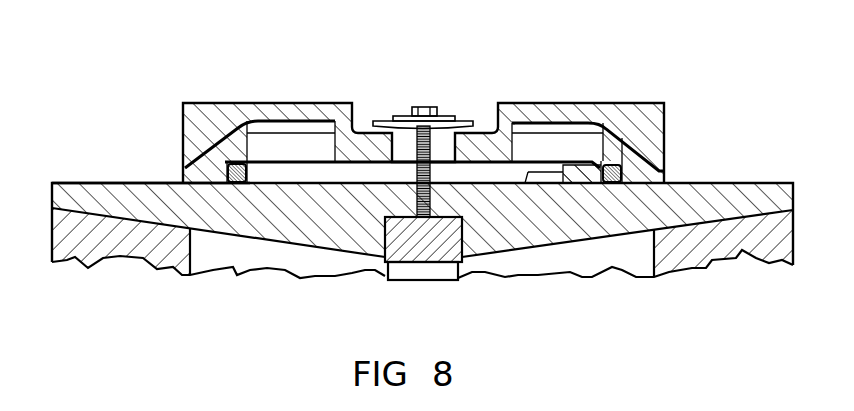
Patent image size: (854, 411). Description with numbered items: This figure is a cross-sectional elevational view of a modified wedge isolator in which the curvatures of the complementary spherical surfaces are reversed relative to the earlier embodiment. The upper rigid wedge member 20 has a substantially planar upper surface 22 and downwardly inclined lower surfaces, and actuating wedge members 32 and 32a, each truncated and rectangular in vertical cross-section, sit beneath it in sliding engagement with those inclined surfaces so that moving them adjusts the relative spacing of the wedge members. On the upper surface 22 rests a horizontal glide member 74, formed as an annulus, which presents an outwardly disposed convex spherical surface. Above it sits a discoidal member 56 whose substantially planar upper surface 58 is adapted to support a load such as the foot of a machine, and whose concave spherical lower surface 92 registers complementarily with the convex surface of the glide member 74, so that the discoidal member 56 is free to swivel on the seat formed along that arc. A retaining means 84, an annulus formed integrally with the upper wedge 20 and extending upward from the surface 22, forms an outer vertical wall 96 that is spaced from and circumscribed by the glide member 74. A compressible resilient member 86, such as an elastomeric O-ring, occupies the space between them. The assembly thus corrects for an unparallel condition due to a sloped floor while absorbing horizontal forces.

The upper rigid wedge member 20 is at (795, 193).
The upper surface 22 is at (88, 183).
The actuating wedge member 32 is at (793, 238).
The actuating wedge member 32a is at (50, 245).
The discoidal member 56 is at (602, 115).
The upper surface 58 is at (532, 102).
The horizontal glide member 74 is at (664, 175).
The retaining means 84 is at (285, 163).
The compressible resilient member 86 is at (185, 170).
The concave spherical lower surface 92 is at (573, 148).
The outer vertical wall 96 is at (215, 135).